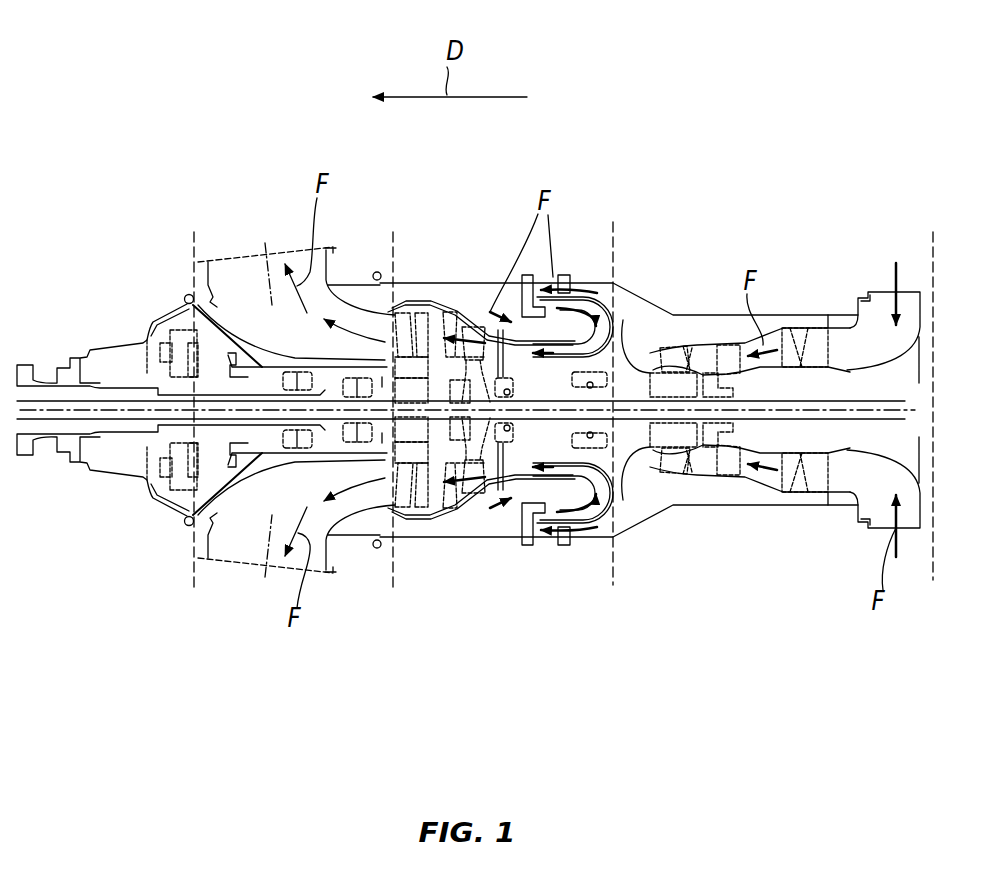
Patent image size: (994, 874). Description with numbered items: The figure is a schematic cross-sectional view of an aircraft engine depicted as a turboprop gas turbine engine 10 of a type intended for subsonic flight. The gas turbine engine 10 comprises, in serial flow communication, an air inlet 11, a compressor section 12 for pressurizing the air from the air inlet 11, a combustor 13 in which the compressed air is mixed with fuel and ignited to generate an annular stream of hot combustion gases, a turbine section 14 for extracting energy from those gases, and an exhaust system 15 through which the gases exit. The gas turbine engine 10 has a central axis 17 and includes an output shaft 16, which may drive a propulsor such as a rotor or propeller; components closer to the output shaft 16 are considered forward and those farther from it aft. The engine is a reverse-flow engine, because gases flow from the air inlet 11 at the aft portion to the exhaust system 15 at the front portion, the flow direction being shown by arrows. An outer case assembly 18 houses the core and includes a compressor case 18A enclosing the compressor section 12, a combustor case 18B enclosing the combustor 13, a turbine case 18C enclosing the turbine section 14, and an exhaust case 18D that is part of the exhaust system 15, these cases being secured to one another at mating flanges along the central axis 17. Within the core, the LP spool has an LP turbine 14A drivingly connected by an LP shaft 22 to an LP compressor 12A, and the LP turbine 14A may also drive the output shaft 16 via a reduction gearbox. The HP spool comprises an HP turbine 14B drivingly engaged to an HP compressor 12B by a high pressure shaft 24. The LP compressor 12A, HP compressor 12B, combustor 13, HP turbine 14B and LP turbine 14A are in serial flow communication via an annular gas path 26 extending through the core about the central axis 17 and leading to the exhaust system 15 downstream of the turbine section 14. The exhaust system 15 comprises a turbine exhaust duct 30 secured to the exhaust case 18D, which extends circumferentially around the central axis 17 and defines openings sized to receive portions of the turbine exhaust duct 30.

The gas turbine engine 10 is at (641, 126).
The air inlet 11 is at (877, 286).
The compressor section 12 is at (687, 526).
The LP compressor 12A is at (705, 465).
The HP compressor 12B is at (633, 352).
The combustor 13 is at (548, 518).
The turbine section 14 is at (455, 526).
The LP turbine 14A is at (403, 483).
The HP turbine 14B is at (545, 443).
The exhaust system 15 is at (242, 230).
The output shaft 16 is at (48, 432).
The central axis 17 is at (803, 407).
The outer case assembly 18 is at (447, 281).
The compressor case 18A is at (827, 316).
The combustor case 18B is at (600, 536).
The turbine case 18C is at (410, 536).
The exhaust case 18D is at (357, 530).
The LP shaft 22 is at (326, 393).
The high pressure shaft 24 is at (673, 395).
The gas path 26 is at (850, 357).
The turbine exhaust duct 30 is at (237, 574).